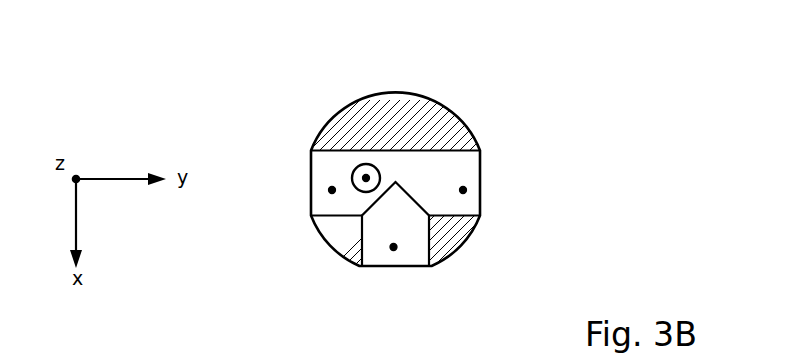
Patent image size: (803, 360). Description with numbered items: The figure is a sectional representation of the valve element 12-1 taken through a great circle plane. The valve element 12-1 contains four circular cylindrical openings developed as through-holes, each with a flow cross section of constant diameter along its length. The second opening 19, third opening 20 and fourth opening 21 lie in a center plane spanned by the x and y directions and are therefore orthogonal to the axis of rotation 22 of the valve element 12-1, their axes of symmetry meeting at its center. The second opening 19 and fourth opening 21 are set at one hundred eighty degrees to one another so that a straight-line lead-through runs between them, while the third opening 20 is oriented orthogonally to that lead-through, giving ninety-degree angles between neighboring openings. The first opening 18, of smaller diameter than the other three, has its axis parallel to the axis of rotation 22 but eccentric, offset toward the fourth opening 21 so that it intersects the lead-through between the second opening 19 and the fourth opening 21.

The valve element 12-1 is at (492, 118).
The first opening 18 is at (363, 176).
The second opening 19 is at (466, 189).
The third opening 20 is at (391, 252).
The fourth opening 21 is at (330, 189).
The axis of rotation 22 is at (394, 172).